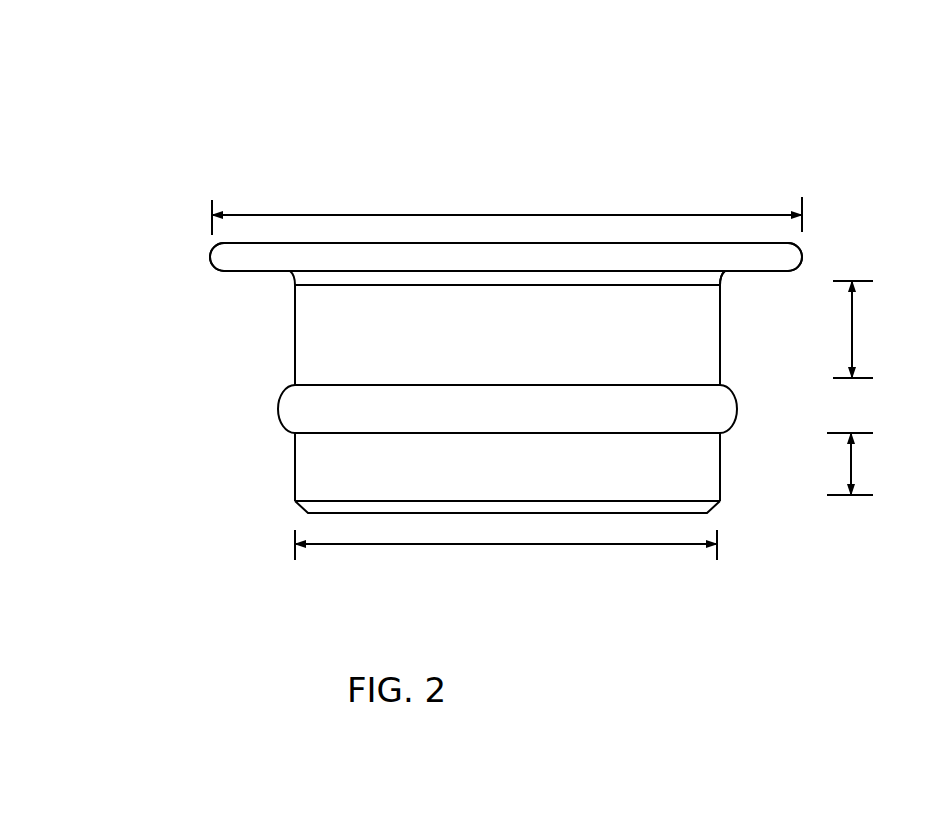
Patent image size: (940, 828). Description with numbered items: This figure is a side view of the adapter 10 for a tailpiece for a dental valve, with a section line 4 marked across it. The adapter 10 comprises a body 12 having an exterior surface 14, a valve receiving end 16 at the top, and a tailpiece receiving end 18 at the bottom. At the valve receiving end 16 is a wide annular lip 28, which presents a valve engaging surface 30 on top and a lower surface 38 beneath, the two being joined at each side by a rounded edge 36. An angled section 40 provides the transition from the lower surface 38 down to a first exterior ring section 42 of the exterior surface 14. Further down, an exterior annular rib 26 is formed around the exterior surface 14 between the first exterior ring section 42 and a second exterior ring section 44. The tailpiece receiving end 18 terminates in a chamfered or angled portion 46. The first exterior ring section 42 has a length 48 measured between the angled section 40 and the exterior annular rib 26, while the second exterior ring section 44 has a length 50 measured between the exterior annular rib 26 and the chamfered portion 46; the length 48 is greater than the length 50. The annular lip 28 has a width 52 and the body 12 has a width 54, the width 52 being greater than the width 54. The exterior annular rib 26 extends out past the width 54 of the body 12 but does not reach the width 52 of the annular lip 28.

The section line 4- 4 is at (493, 128).
The adapter 10 is at (744, 156).
The body 12 is at (250, 397).
The exterior surface 14 is at (358, 333).
The valve receiving end 16 is at (588, 195).
The tailpiece receiving end 18 is at (650, 572).
The exterior annular rib 26 is at (712, 406).
The annular lip 28 is at (203, 242).
The valve engaging surface 30 is at (330, 244).
The rounded edge 36 is at (208, 257).
The lower surface 38 is at (775, 280).
The angled section 40 is at (727, 280).
The first exterior ring section 42 is at (722, 338).
The second exterior ring section 44 is at (295, 470).
The chamfered portion 46 is at (715, 508).
The length 48 is at (852, 328).
The length 50 is at (851, 460).
The width 52 is at (496, 215).
The width 54 is at (578, 544).